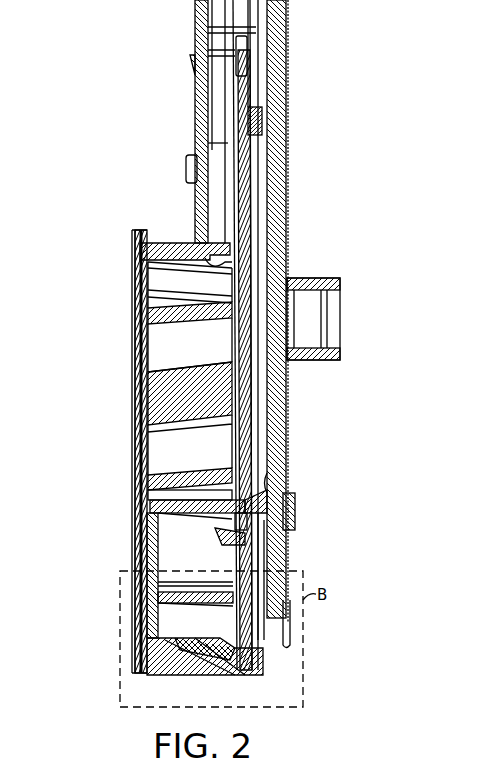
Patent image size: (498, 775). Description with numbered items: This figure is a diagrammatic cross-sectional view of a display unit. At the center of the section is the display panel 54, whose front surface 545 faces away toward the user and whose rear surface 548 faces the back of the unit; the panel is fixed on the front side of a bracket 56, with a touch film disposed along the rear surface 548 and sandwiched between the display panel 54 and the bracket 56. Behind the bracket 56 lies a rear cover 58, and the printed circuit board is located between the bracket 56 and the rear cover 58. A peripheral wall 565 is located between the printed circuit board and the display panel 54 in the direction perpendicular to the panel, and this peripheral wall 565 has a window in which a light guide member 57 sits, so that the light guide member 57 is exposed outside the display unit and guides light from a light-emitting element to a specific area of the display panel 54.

The rear surface 548 is at (143, 245).
The front surface 545 is at (132, 337).
The display panel 54 is at (132, 481).
The bracket 56 is at (243, 411).
The rear cover 58 is at (278, 450).
The light guide member 57 is at (165, 661).
The peripheral wall 565 is at (228, 673).